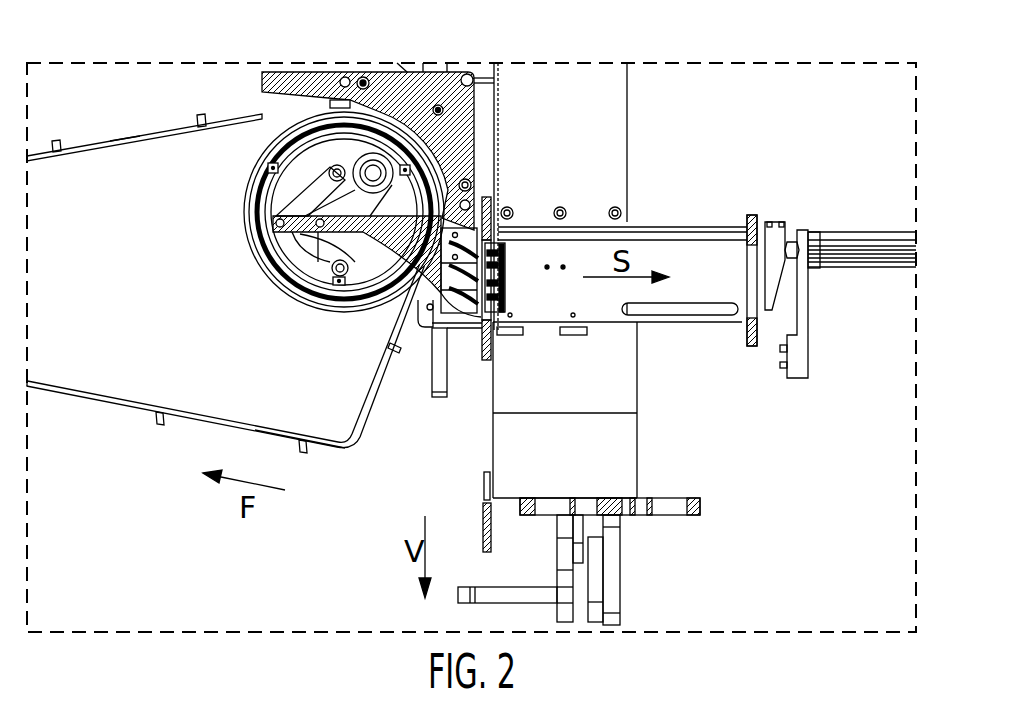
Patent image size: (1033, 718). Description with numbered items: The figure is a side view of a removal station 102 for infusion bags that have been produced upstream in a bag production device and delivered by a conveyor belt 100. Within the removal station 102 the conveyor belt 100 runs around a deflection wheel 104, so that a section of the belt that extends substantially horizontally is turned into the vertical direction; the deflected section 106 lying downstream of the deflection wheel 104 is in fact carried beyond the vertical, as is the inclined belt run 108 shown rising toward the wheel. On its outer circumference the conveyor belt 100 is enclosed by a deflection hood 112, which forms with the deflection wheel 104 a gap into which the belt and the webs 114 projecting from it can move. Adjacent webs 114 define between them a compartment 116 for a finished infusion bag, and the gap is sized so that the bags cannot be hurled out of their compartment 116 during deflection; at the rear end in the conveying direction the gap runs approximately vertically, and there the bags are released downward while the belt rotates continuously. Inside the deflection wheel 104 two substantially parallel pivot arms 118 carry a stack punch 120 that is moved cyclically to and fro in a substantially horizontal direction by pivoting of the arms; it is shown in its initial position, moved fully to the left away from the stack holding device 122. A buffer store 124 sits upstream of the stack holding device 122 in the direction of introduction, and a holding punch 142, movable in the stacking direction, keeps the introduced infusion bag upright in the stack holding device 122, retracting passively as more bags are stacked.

The conveyor belt 100 is at (81, 380).
The removal station 102 is at (494, 140).
The deflection wheel 104 is at (229, 178).
The deflected section 106 is at (87, 118).
The inclined guide rail section 108 is at (372, 416).
The deflection hood 112 is at (296, 72).
The webs 114 is at (201, 114).
The compartment 116 is at (126, 138).
The pivot arms 118 is at (340, 212).
The stack punch 120 is at (362, 240).
The stack holding device 122 is at (583, 246).
The buffer store 124 is at (486, 192).
The holding punch 142 is at (800, 214).